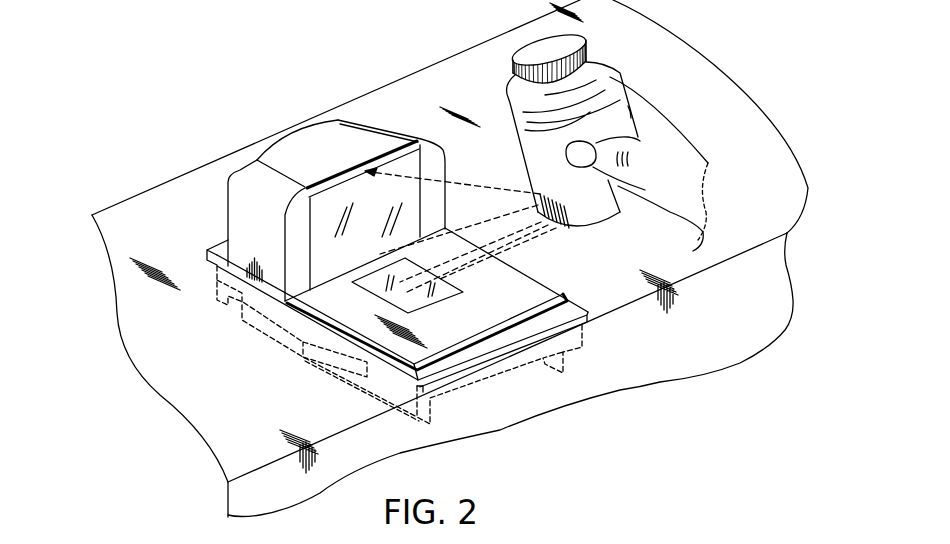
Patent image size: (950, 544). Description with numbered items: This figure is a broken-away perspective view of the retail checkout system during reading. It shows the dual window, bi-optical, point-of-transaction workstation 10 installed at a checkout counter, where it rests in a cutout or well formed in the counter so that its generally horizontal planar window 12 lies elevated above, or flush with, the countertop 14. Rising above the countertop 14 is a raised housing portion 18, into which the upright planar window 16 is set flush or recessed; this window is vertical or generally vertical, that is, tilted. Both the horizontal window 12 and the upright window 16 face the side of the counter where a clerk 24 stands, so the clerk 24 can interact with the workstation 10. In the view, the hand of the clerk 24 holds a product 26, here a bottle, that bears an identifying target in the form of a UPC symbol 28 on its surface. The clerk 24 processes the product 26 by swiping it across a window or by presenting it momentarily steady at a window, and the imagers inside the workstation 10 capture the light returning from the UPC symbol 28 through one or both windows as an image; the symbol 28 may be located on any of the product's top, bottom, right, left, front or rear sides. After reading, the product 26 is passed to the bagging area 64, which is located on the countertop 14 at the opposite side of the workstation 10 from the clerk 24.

The point-of-transaction workstation 10 is at (397, 252).
The horizontal planar window 12 is at (443, 293).
The countertop 14 is at (625, 296).
The upright planar window 16 is at (332, 206).
The raised housing portion 18 is at (434, 163).
The clerk 24 is at (709, 228).
The product 26 is at (617, 78).
The UPC symbol 28 is at (571, 210).
The bagging area 64 is at (166, 401).